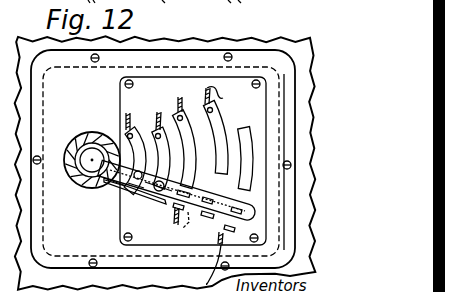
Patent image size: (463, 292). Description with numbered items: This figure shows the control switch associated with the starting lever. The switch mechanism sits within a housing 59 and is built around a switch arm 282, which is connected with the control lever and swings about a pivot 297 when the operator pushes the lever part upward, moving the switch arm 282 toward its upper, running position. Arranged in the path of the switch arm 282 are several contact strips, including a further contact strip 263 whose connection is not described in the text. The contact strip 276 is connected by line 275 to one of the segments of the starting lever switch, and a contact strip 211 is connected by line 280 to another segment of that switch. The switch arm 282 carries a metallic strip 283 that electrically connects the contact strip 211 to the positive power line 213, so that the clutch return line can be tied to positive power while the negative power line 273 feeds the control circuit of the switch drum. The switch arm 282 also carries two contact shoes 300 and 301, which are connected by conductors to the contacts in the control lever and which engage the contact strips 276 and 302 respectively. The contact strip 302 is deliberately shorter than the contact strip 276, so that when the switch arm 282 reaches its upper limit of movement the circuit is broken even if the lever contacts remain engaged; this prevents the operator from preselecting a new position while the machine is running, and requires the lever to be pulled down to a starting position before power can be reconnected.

The housing 59 is at (157, 162).
The contact strip 211 is at (247, 157).
The positive power line 213 is at (173, 222).
The contact segment 263 is at (223, 98).
The negative power line 273 is at (168, 108).
The line 275 is at (128, 113).
The contact strip 276 is at (149, 126).
The line 280 is at (208, 281).
The switch arm 282 is at (168, 194).
The metallic strip 283 is at (188, 215).
The pivot 297 is at (90, 131).
The contact shoe 300 is at (140, 186).
The contact shoe 301 is at (150, 201).
The contact strip 302 is at (183, 112).